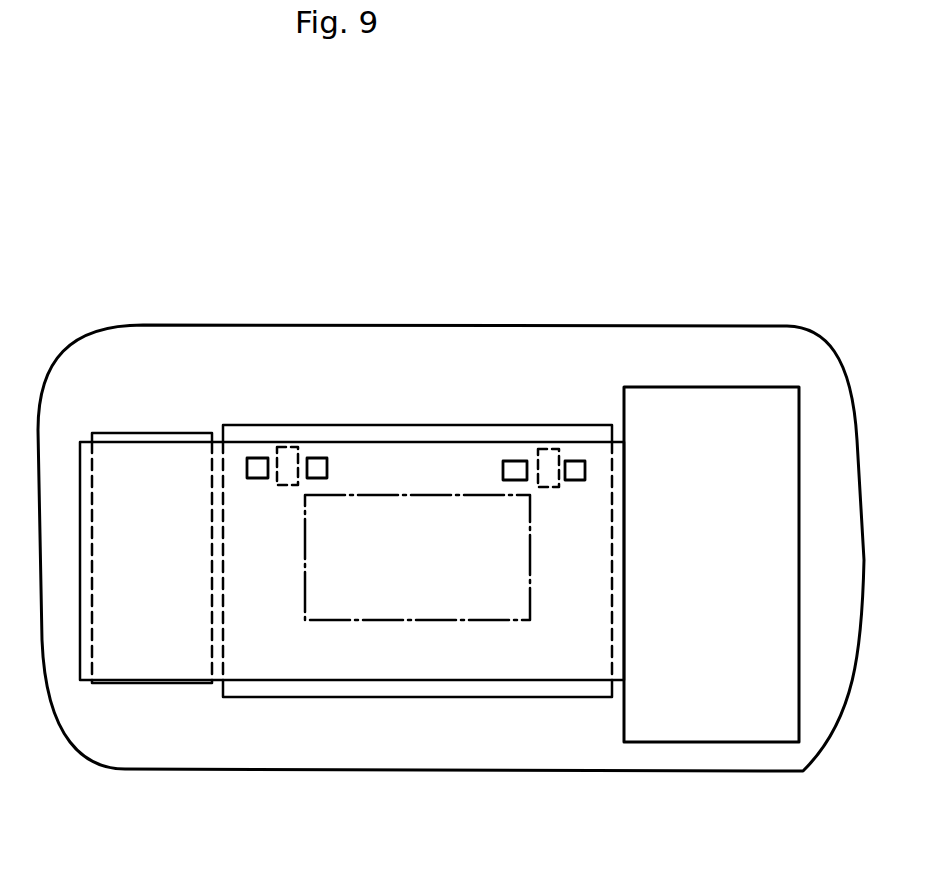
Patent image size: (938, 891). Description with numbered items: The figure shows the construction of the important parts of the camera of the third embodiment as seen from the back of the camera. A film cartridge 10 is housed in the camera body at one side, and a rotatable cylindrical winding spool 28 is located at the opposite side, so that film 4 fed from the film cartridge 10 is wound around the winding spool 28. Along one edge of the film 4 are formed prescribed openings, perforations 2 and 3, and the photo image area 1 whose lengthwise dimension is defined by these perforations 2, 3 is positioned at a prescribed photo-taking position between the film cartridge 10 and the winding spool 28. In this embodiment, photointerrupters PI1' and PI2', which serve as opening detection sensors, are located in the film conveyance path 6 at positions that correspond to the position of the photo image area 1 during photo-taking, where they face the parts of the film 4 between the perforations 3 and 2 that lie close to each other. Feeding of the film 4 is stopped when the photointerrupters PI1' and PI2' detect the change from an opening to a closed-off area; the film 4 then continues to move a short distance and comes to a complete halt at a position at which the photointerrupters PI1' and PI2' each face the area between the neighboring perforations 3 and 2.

The photo image area 1 is at (437, 496).
The perforation 2 is at (320, 458).
The perforation 3 is at (257, 458).
The film 4 is at (80, 645).
The film conveyance path 6 is at (397, 423).
The film cartridge 10 is at (762, 387).
The winding spool 28 is at (142, 432).
The photointerrupter PI1' is at (304, 371).
The photointerrupter PI2' is at (577, 369).